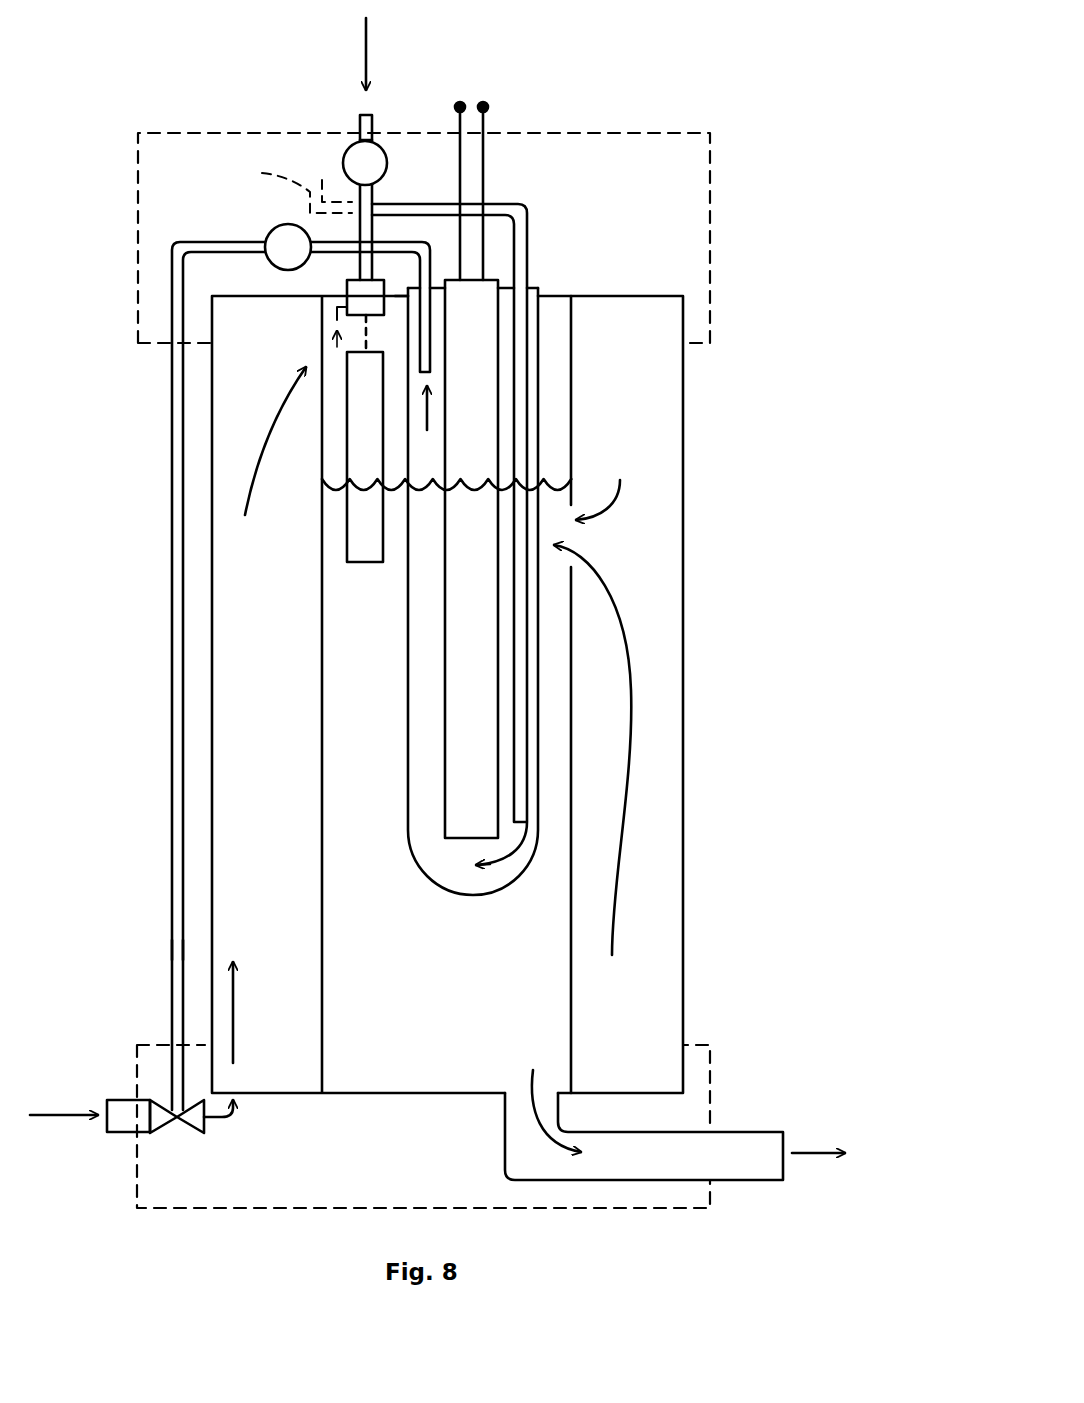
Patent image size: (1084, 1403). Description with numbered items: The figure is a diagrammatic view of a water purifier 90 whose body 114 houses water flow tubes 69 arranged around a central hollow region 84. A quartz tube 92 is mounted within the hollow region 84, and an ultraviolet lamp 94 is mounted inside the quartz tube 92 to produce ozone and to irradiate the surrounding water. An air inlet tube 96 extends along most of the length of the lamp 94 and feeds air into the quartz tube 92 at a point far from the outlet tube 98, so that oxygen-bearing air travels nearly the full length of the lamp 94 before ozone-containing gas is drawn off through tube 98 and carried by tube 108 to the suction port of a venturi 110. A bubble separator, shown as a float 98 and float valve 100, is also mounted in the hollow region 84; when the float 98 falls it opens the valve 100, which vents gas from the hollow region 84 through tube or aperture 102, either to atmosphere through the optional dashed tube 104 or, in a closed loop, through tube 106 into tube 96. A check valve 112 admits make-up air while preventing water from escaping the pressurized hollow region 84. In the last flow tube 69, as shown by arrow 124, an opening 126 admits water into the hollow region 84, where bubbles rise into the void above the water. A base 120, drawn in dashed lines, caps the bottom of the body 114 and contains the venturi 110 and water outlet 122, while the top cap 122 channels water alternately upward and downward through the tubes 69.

The flow tube 69 is at (212, 690).
The hollow region 84 is at (553, 292).
The water purifier 90 is at (780, 937).
The quartz tube 92 is at (523, 868).
The ultraviolet lamp 94 is at (500, 783).
The air inlet tube 96 is at (530, 226).
The float 98 is at (347, 430).
The float valve 100 is at (347, 290).
The tube or aperture 102 is at (337, 316).
The dashed line tube 104 is at (285, 186).
The tube 106 is at (383, 226).
The tube 108 is at (172, 950).
The venturi 110 is at (375, 196).
The check valve 112 is at (343, 157).
The body 114 is at (726, 494).
The base 120 is at (197, 1208).
The top cap 122 is at (712, 250).
The arrow 124 is at (631, 683).
The opening 126 is at (611, 484).